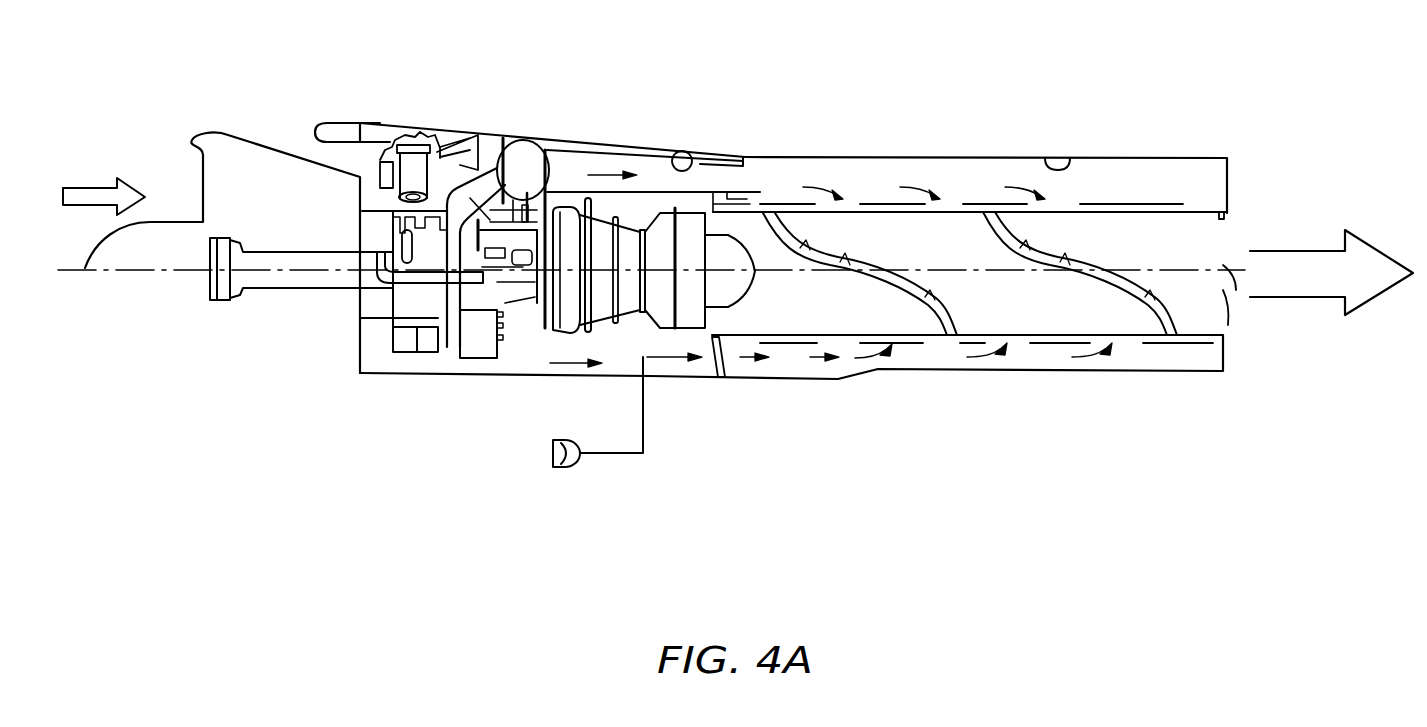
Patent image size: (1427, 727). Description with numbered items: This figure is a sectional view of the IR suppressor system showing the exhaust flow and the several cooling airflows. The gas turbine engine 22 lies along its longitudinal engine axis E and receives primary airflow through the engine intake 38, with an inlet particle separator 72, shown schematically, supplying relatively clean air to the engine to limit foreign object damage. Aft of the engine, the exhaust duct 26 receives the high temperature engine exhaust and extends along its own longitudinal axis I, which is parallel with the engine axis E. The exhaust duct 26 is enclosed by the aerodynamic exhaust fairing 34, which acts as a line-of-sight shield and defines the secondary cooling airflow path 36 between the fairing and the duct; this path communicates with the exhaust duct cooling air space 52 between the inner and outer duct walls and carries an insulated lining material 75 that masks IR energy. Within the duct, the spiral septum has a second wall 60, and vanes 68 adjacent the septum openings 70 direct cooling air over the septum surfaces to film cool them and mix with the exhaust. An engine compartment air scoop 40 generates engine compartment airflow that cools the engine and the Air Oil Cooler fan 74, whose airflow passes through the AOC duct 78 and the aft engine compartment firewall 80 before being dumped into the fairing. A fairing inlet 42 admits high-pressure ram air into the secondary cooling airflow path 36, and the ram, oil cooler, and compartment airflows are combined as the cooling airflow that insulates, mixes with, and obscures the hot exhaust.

The gas turbine engine 22 is at (403, 348).
The exhaust duct 26 is at (1052, 342).
The aerodynamic exhaust fairing 34 is at (841, 145).
The secondary cooling airflow path 36 is at (640, 358).
The engine intake 38 is at (200, 162).
The engine compartment air scoop 40 is at (253, 125).
The fairing inlet 42 is at (553, 452).
The exhaust duct cooling air space 52 is at (1186, 207).
The second wall 60 is at (1222, 242).
The vanes 68 is at (840, 275).
The spiral septum opening 70 is at (876, 268).
The inlet particle separator 72 is at (470, 178).
The Air Oil Cooler fan 74 is at (525, 152).
The insulated lining material 75 is at (1065, 157).
The AOC duct 78 is at (694, 158).
The aft engine compartment firewall 80 is at (727, 380).
The longitudinal engine axis E is at (178, 272).
The longitudinal axis I is at (1165, 268).